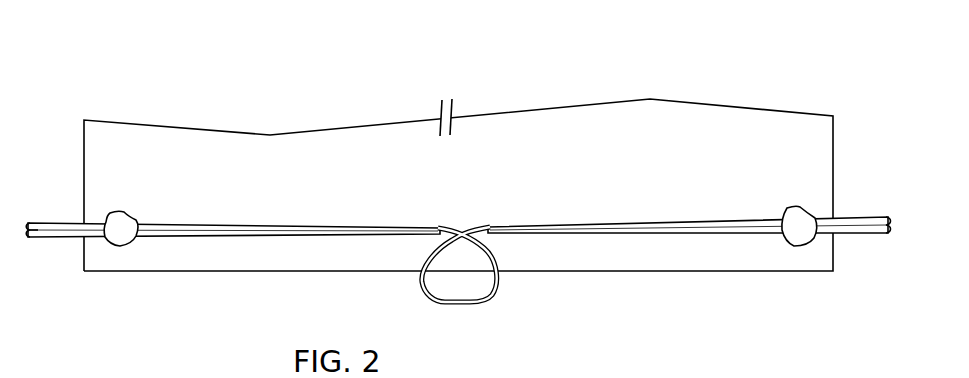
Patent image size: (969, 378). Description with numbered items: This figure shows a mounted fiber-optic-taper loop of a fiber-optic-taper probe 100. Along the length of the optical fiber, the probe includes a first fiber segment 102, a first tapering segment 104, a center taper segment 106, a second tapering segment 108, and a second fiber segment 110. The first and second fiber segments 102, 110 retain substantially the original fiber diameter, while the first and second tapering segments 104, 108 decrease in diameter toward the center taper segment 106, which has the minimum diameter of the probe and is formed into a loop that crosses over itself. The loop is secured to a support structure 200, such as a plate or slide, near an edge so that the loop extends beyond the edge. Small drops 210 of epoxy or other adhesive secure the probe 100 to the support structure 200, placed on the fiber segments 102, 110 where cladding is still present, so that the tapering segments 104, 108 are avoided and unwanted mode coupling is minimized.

The fiber-optic-taper probe 100 is at (458, 196).
The first fiber segment 102 is at (67, 236).
The first tapering segment 104 is at (261, 232).
The center taper segment 106 is at (461, 303).
The second tapering segment 108 is at (585, 232).
The second fiber segment 110 is at (858, 226).
The support structure 200 is at (628, 179).
The drops of adhesive 210 is at (125, 235).